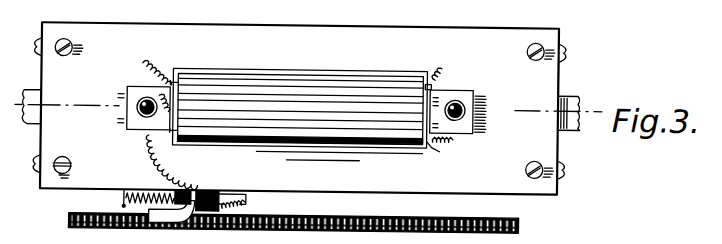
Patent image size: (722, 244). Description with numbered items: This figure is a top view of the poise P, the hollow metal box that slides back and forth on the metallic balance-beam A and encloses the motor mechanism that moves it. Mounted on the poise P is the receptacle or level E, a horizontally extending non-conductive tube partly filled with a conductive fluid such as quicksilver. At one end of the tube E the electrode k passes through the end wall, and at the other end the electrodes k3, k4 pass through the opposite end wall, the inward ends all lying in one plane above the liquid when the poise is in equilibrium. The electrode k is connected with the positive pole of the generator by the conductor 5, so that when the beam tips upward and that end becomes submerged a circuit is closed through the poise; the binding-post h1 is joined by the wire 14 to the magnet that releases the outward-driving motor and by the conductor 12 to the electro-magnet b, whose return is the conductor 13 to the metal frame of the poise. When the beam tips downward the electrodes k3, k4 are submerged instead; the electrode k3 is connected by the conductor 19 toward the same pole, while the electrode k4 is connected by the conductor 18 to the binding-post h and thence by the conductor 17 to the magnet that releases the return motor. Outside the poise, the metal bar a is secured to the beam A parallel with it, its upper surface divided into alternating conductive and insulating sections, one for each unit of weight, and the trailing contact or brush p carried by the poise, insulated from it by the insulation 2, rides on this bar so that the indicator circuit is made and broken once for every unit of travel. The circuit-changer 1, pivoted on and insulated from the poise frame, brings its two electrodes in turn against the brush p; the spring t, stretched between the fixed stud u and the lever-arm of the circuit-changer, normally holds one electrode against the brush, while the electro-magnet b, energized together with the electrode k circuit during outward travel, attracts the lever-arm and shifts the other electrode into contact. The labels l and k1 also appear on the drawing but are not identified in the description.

The circuit-changer 1 is at (67, 105).
The insulation 2 is at (560, 113).
The electric conductor 5 is at (138, 39).
The conductor 12 is at (172, 162).
The conductor 13 is at (242, 204).
The wire 14 is at (165, 100).
The conductor 17 is at (488, 114).
The conductor 18 is at (448, 143).
The conductor 19 is at (476, 37).
The metal bar a is at (526, 229).
The electro-magnet b is at (197, 192).
The lever l is at (232, 189).
The trailing contact or brush p is at (172, 211).
The spring t is at (150, 188).
The fixed stud u is at (116, 198).
The binding-post h is at (464, 100).
The binding-post h1 is at (131, 108).
The electrode k is at (161, 80).
The hook k1 is at (169, 119).
The electrode k3 is at (438, 84).
The electrode k4 is at (436, 152).
The balance-beam A is at (566, 79).
The level E is at (299, 114).
The poise P is at (299, 108).